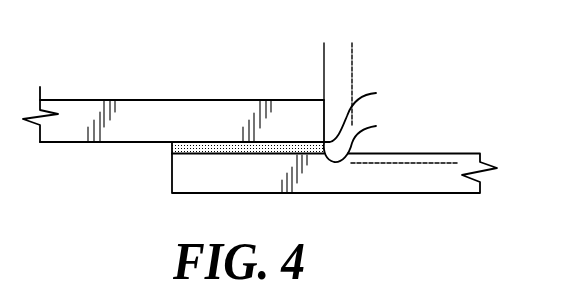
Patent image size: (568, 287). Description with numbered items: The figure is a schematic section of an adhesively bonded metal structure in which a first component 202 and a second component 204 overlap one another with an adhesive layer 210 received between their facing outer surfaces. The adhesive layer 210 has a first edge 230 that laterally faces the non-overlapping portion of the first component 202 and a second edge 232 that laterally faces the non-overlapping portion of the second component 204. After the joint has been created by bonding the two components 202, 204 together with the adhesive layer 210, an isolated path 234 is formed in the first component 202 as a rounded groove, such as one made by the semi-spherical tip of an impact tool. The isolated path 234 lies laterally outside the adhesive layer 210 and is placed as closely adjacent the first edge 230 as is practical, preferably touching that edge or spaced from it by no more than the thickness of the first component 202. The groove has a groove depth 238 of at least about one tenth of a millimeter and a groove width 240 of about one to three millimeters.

The first component 202 is at (322, 187).
The second component 204 is at (133, 114).
The adhesive layer 210 is at (202, 155).
The first edge 230 is at (376, 93).
The second edge 232 is at (172, 146).
The isolated path 234 is at (376, 126).
The groove depth 238 is at (443, 176).
The groove width 240 is at (365, 53).